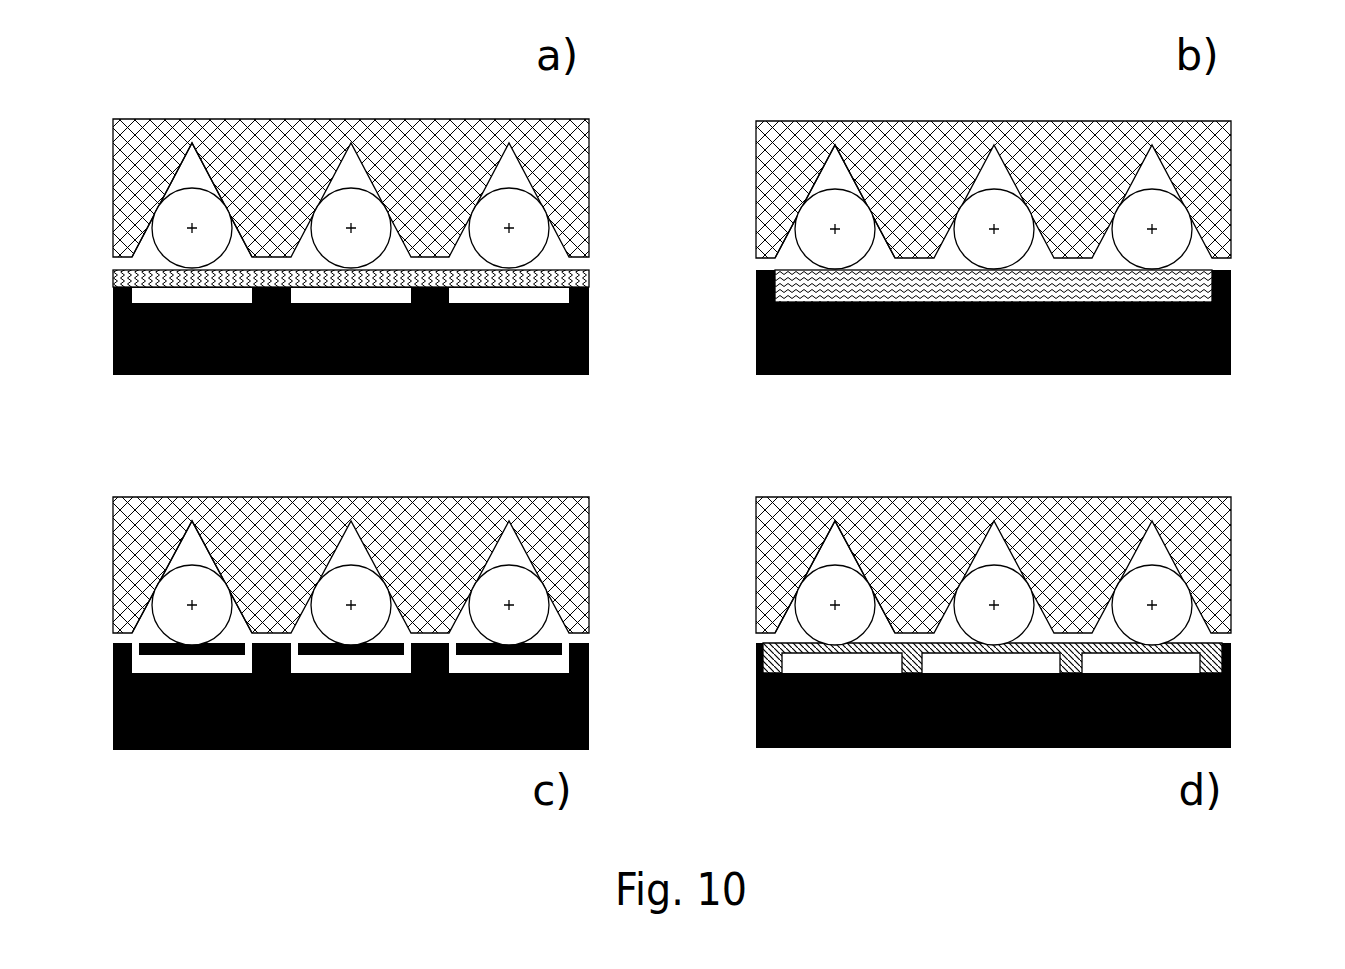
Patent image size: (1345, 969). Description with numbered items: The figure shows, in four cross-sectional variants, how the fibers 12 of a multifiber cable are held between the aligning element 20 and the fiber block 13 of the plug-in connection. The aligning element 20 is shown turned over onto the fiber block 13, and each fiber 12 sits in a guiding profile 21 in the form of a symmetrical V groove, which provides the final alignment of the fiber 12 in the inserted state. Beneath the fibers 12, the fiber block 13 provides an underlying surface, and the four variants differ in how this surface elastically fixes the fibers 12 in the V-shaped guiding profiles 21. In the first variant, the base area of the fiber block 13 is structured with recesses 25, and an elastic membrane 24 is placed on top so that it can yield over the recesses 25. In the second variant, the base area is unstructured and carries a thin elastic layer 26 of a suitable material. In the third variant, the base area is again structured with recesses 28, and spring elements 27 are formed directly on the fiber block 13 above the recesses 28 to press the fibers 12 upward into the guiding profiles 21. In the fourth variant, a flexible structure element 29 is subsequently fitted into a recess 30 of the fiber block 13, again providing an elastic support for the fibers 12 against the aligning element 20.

The fiber 12 is at (192, 228).
The fiber block 13 is at (113, 335).
The aligning element 20 is at (427, 160).
The guiding profile 21 is at (192, 177).
The elastic membrane 24 is at (565, 275).
The recess 25 is at (188, 297).
The thin elastic layer 26 is at (1160, 288).
The spring element 27 is at (543, 643).
The recess 28 is at (185, 665).
The flexible structure element 29 is at (795, 652).
The recess 30 is at (1172, 660).